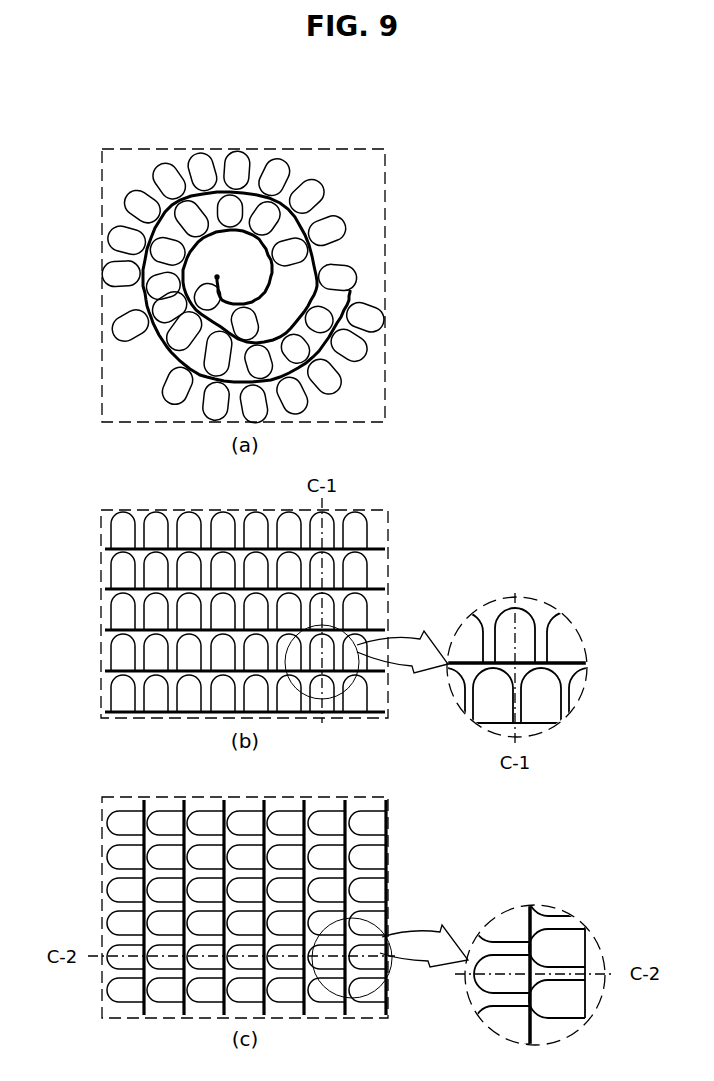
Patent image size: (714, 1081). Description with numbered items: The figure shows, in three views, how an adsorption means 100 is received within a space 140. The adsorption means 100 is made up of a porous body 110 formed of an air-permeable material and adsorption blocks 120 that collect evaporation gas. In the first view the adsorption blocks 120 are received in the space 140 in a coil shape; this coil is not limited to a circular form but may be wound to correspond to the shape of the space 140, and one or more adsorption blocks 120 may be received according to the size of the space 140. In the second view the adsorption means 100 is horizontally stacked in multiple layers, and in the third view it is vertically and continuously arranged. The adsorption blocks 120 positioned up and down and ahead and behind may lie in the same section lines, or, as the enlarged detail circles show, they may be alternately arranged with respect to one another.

The adsorption means 100 is at (449, 260).
The porous body 110 is at (348, 293).
The adsorption block 120 is at (348, 266).
The space 140 is at (372, 182).